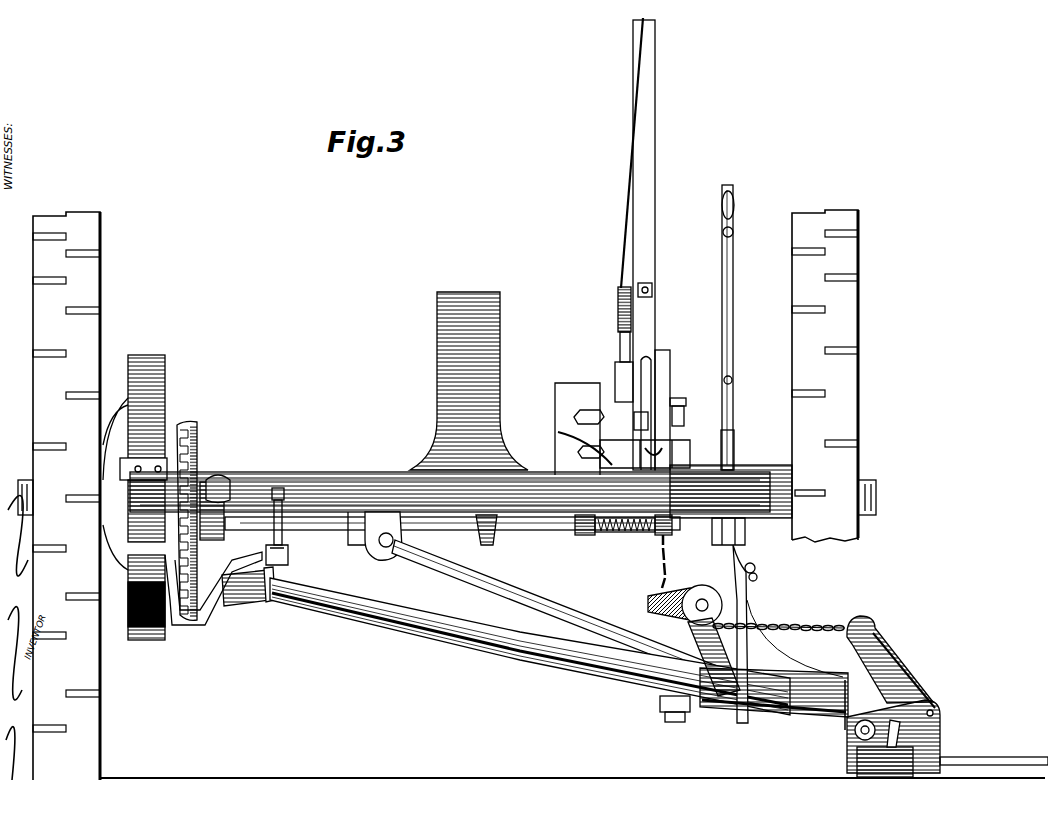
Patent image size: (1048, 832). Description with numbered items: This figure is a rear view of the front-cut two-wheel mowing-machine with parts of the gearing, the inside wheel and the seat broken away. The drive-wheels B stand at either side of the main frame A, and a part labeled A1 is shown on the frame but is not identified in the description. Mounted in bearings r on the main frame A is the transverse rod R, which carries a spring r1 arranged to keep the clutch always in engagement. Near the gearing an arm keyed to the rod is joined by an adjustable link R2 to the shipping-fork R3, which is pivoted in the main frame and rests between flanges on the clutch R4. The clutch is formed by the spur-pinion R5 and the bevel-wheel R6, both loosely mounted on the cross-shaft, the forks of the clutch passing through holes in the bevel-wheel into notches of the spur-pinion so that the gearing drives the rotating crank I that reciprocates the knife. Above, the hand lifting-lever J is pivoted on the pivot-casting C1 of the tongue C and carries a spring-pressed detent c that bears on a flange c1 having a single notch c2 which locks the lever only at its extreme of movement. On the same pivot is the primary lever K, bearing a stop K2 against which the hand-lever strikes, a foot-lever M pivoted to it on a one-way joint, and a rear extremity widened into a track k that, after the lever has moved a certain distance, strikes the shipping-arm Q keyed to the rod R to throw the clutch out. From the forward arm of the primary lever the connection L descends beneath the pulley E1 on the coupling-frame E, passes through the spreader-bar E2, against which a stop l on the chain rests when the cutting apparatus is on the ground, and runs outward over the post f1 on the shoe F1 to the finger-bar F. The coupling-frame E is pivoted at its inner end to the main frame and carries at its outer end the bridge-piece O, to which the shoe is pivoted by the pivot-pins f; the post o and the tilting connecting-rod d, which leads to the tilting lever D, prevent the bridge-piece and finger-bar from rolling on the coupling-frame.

The drive-wheels B is at (88, 297).
The main frame A is at (353, 492).
The axle bracket lug A1 is at (495, 530).
The transverse rod R is at (285, 535).
The adjustable link R2 is at (303, 530).
The shipping-fork R3 is at (225, 480).
The clutch R4 is at (206, 482).
The spur-pinion R5 is at (143, 505).
The bevel-wheel R6 is at (198, 442).
The rotating crank I is at (240, 605).
The coupling-frame E is at (538, 665).
The pulley E1 is at (702, 600).
The spreader-bar E2 is at (650, 602).
The tongue C is at (580, 393).
The pivot-casting C1 is at (574, 432).
The spring-pressed detent c is at (620, 308).
The flange c1 is at (626, 388).
The notch c2 is at (606, 462).
The hand lifting-lever J is at (650, 247).
The foot-lever M is at (650, 380).
The track k is at (662, 390).
The primary lever K is at (678, 404).
The stop K2 is at (636, 420).
The shipping-arm Q is at (664, 456).
The tilting lever D is at (733, 380).
The tilting connecting-rod d is at (746, 562).
The bearings r is at (585, 535).
The spring r1 is at (600, 531).
The stop l is at (658, 583).
The connection L is at (774, 622).
The post o is at (758, 592).
The bridge-piece O is at (800, 688).
The pivot-pins f is at (847, 735).
The post f1 is at (890, 690).
The finger-bar F is at (975, 764).
The shoe F1 is at (848, 752).